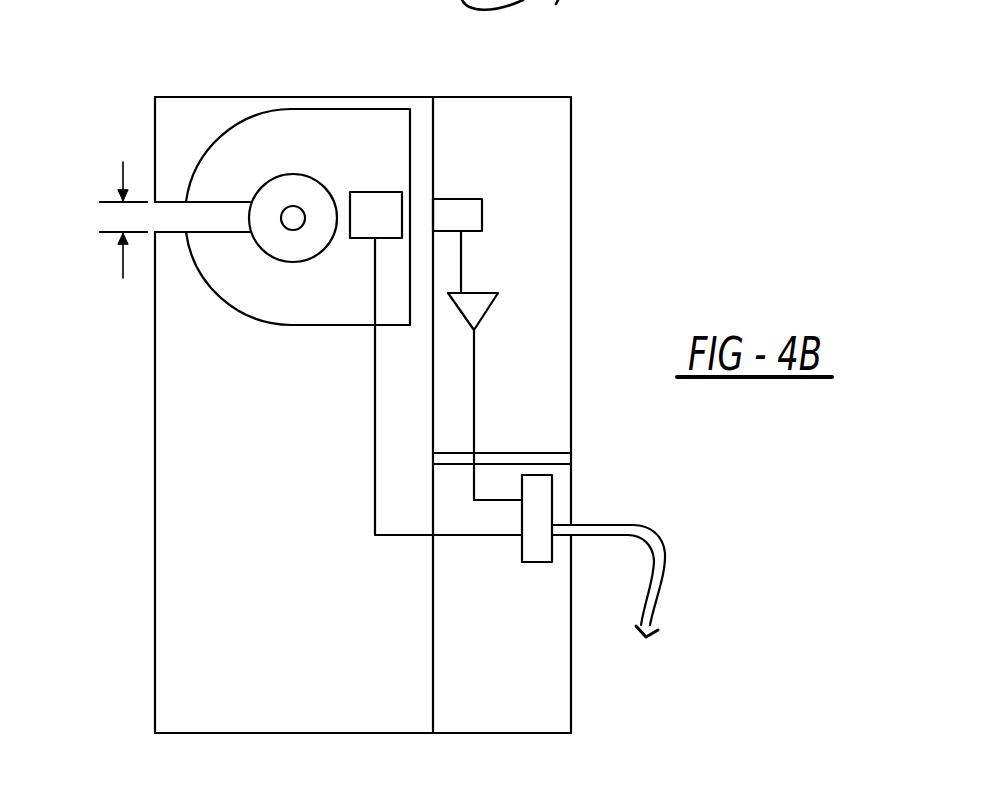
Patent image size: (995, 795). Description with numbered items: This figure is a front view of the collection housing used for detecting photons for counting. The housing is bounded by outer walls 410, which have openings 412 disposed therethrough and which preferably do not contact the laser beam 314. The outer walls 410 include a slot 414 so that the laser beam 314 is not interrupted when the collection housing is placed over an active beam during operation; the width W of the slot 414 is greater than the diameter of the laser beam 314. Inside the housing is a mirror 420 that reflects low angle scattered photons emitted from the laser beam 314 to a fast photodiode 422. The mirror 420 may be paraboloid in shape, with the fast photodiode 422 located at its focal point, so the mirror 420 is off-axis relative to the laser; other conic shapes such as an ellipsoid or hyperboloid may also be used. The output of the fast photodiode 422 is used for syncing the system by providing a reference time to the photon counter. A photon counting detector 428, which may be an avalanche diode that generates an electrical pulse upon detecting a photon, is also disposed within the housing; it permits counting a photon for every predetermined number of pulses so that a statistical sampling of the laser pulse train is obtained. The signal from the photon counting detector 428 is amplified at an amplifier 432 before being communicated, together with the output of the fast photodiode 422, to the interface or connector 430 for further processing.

The outer walls 410 is at (308, 624).
The openings 412 is at (267, 258).
The slot 414 is at (172, 202).
The mirror 420 is at (247, 152).
The laser beam 314 is at (293, 205).
The fast photodiode 422 is at (375, 192).
The photon counting detector 428 is at (482, 215).
The amplifier 432 is at (495, 305).
The interface 430 is at (553, 498).